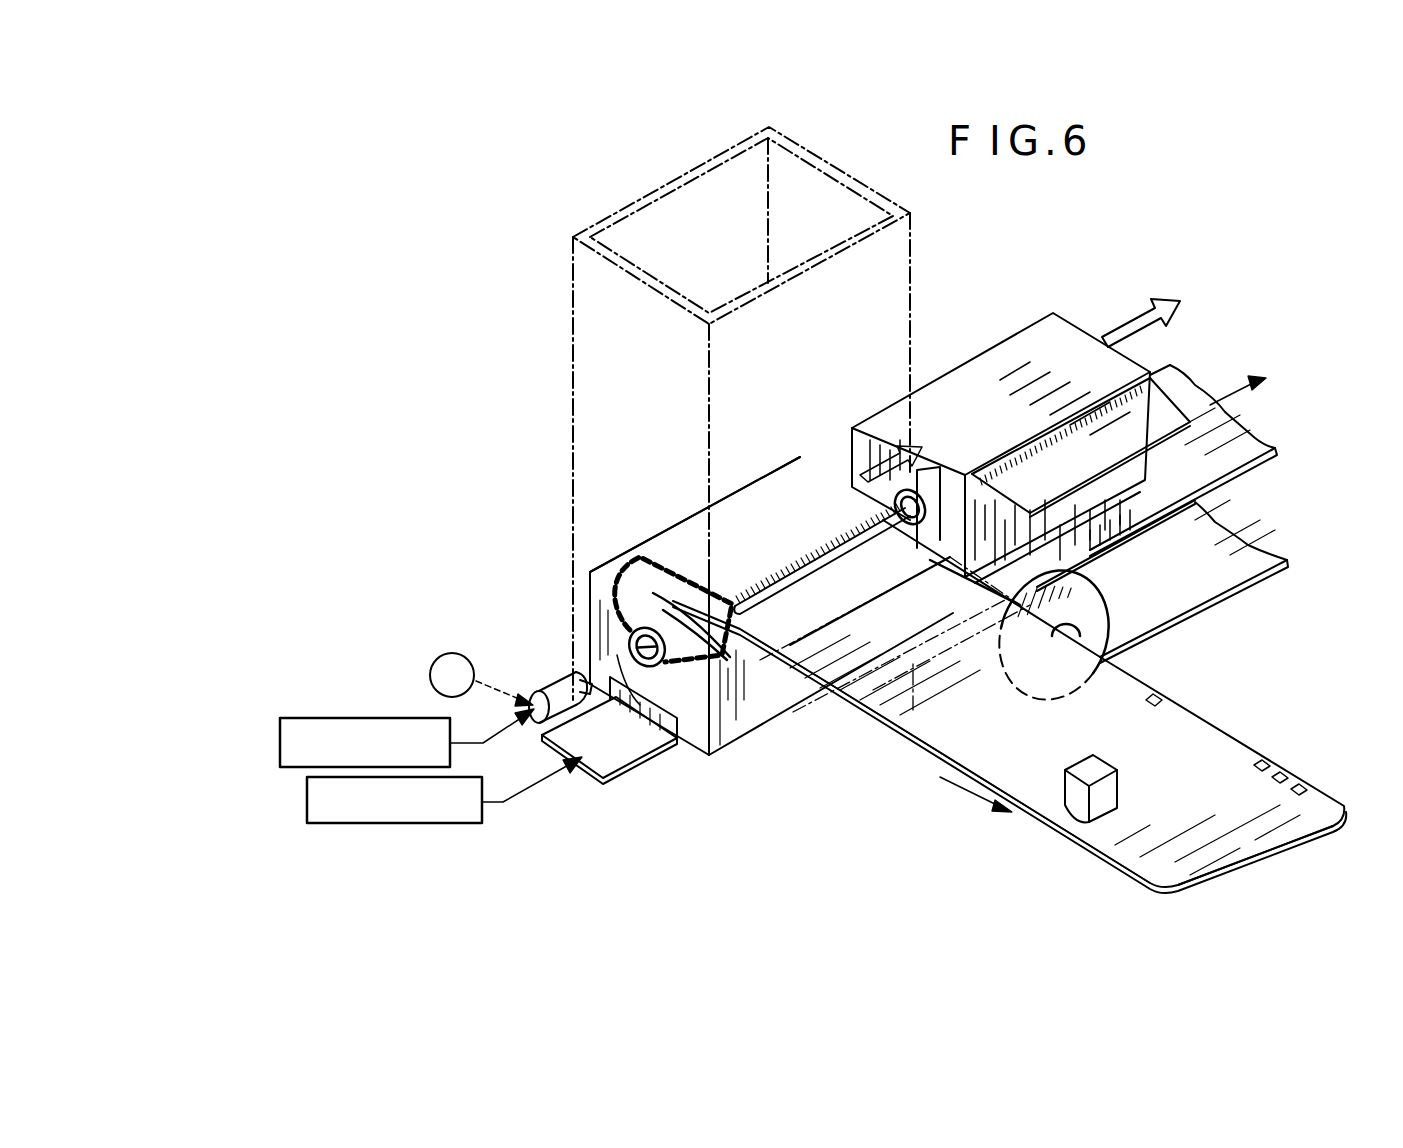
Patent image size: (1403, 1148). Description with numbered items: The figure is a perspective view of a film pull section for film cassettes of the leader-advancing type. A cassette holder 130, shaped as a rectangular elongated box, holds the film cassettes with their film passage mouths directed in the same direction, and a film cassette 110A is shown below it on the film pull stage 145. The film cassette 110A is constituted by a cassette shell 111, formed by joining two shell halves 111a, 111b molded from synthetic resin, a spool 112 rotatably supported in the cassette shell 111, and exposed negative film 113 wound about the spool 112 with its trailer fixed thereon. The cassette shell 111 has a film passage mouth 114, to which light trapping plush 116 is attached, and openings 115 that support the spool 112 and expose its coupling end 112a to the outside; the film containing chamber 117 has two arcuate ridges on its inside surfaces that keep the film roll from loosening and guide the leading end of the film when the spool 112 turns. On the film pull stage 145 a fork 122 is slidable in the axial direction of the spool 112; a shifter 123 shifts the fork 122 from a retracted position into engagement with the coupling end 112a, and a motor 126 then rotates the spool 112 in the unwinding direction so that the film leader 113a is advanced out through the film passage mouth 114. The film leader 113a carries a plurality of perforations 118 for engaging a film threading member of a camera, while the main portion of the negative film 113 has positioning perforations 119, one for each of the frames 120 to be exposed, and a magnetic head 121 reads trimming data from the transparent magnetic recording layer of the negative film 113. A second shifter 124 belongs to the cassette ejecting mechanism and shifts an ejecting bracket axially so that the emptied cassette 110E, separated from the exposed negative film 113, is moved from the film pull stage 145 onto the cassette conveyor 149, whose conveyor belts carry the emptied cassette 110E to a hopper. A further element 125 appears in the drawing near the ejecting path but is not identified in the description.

The cassette holder 130 is at (548, 335).
The film cassette 110A is at (606, 476).
The emptied cassette 110E is at (1001, 330).
The cassette shell 111 is at (628, 539).
The shell half 111a is at (602, 580).
The shell half 111b is at (705, 705).
The spool 112 is at (605, 632).
The coupling end 112a is at (660, 665).
The exposed negative film 113 is at (1092, 870).
The film leader 113a is at (1230, 850).
The film passage mouth 114 is at (775, 600).
The openings 115 is at (618, 610).
The plush 116 is at (828, 568).
The film containing chamber 117 is at (670, 567).
The perforations 118 is at (1285, 775).
The positioning perforations 119 is at (1160, 700).
The frames 120 is at (913, 710).
The magnetic head 121 is at (1107, 802).
The fork 122 is at (548, 685).
The shifter 123 is at (365, 717).
The shifter 124 is at (405, 823).
The slide plate 125 is at (620, 773).
The motor 126 is at (437, 656).
The film pull stage 145 is at (810, 712).
The cassette conveyor 149 is at (1243, 455).